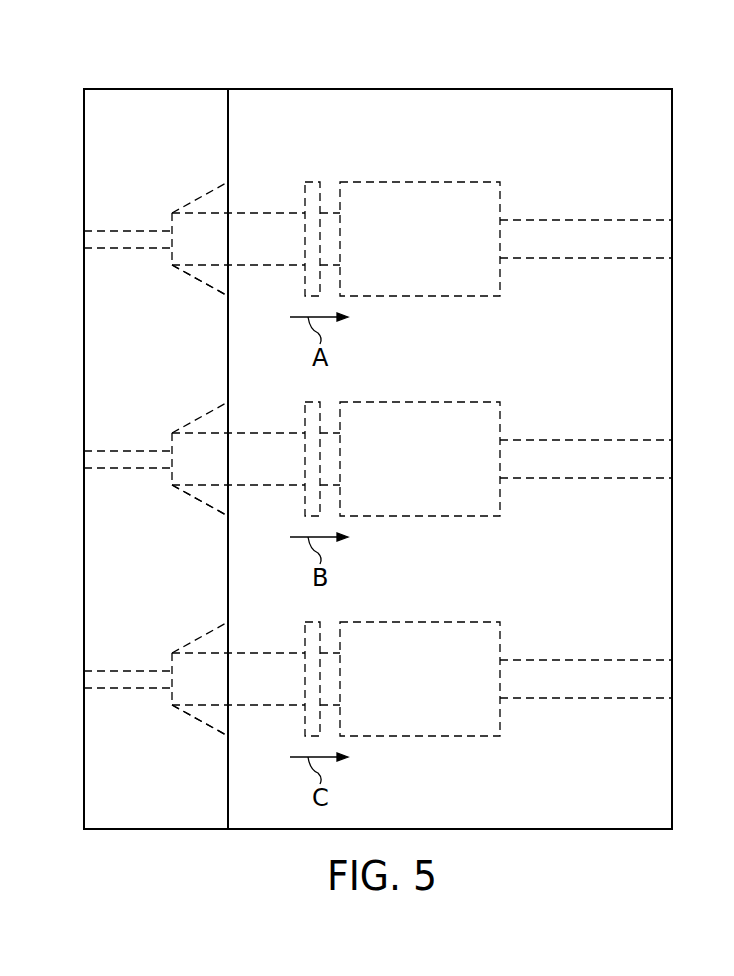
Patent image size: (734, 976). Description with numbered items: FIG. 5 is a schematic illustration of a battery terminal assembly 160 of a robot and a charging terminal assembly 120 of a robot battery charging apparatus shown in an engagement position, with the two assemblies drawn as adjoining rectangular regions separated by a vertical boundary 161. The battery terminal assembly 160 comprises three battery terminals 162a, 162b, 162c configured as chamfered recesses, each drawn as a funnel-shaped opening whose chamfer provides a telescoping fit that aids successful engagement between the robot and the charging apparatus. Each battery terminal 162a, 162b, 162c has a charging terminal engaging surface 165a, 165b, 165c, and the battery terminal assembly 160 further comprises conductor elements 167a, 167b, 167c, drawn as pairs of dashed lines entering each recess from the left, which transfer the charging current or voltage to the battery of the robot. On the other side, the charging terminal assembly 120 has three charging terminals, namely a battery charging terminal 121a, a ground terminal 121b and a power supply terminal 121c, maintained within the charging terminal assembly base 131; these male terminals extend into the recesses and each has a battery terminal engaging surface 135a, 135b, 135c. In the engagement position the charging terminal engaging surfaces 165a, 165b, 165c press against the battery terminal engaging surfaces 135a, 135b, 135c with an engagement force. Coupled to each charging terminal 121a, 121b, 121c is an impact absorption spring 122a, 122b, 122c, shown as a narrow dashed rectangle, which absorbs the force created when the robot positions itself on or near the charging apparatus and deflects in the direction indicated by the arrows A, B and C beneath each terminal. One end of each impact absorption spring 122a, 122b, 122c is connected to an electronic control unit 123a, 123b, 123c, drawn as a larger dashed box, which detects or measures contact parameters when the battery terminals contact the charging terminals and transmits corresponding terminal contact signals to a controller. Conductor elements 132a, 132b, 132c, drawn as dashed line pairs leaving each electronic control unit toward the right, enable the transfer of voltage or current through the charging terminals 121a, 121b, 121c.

The battery terminal assembly 160 is at (116, 86).
The connector facet 161 is at (95, 128).
The charging terminal assembly 120 is at (517, 85).
The charging terminal assembly base 131 is at (661, 120).
The conductor element 167a is at (109, 230).
The conductor element 167b is at (86, 438).
The conductor element 167c is at (86, 658).
The charging terminal engaging surface 165a is at (161, 222).
The charging terminal engaging surface 165b is at (161, 442).
The charging terminal engaging surface 165c is at (161, 662).
The battery terminal engaging surface 135a is at (168, 216).
The battery terminal engaging surface 135b is at (161, 442).
The battery terminal engaging surface 135c is at (161, 662).
The battery terminal 162a is at (198, 280).
The battery terminal 162b is at (169, 504).
The battery terminal 162c is at (169, 724).
The battery charging terminal 121a is at (268, 212).
The ground terminal 121b is at (256, 427).
The power supply terminal 121c is at (256, 647).
The impact absorption spring 122a is at (313, 181).
The impact absorption spring 122b is at (350, 442).
The impact absorption spring 122c is at (350, 662).
The electronic control unit 123a is at (500, 207).
The electronic control unit 123b is at (467, 456).
The electronic control unit 123c is at (467, 676).
The conductor element 132a is at (635, 259).
The conductor element 132b is at (586, 493).
The conductor element 132c is at (586, 713).